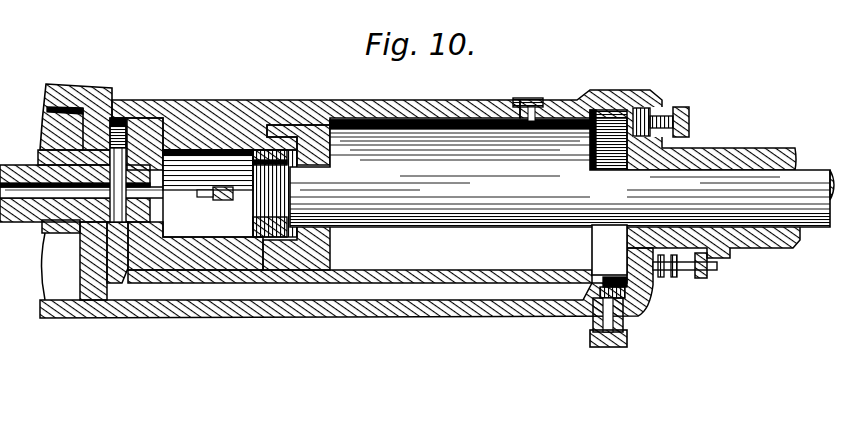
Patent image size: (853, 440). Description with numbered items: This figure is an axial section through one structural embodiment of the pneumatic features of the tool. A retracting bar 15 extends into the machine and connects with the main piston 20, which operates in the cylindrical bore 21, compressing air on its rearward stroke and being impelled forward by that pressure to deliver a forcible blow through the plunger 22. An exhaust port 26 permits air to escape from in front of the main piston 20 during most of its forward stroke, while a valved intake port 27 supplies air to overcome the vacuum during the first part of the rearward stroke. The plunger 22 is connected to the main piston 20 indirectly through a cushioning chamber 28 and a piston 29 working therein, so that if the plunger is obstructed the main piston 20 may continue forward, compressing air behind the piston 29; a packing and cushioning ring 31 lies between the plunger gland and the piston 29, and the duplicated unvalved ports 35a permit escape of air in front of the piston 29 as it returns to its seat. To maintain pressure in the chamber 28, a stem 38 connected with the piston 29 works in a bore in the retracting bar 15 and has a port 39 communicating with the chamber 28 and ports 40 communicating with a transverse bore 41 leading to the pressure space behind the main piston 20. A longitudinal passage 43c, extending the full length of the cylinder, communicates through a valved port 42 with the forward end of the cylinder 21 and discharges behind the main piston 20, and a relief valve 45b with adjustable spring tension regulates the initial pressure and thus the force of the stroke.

The retracting bar 15 is at (16, 172).
The main piston 20 is at (222, 255).
The cylindrical bore 21 is at (360, 263).
The plunger 22 is at (562, 173).
The exhaust port 26 is at (528, 98).
The valved intake port 27 is at (668, 272).
The cushioning chamber 28 is at (208, 193).
The piston 29 is at (257, 196).
The packing and cushioning ring 31 is at (293, 168).
The ports 35a is at (300, 327).
The stem 38 is at (190, 185).
The port 39 is at (222, 186).
The ports 40 is at (158, 125).
The transverse bore 41 is at (118, 118).
The valved port 42 is at (597, 272).
The longitudinal passage 43c is at (410, 292).
The relief valve 45b is at (670, 101).